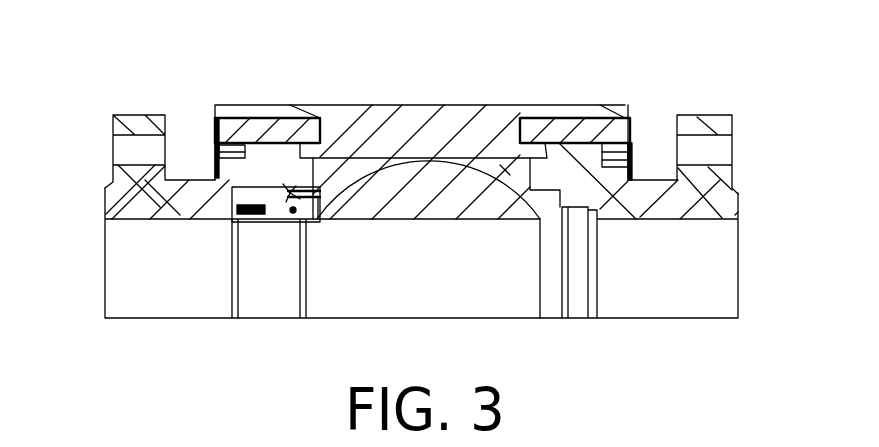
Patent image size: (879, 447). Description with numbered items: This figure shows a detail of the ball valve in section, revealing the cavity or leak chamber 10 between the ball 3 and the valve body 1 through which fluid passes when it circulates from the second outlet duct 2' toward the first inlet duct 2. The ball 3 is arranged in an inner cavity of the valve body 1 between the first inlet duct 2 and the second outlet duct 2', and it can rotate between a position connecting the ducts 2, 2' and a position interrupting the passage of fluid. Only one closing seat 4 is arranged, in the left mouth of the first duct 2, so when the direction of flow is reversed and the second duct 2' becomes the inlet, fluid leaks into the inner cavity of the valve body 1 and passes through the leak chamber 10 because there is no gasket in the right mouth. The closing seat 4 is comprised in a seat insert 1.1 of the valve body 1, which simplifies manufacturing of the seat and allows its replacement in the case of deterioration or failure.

The valve body 1 is at (207, 208).
The seat insert 1.1 is at (278, 215).
The first inlet duct 2 is at (283, 191).
The second outlet duct 2' is at (680, 207).
The ball 3 is at (418, 193).
The closing seat 4 is at (290, 192).
The leak chamber 10 is at (505, 170).